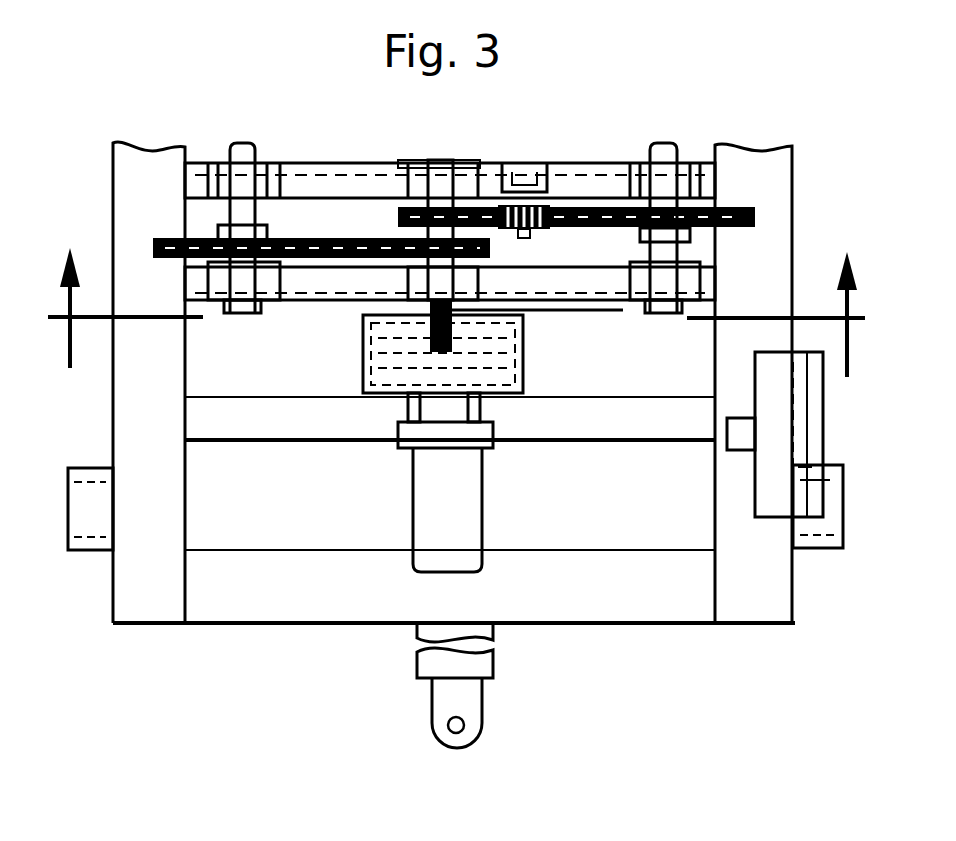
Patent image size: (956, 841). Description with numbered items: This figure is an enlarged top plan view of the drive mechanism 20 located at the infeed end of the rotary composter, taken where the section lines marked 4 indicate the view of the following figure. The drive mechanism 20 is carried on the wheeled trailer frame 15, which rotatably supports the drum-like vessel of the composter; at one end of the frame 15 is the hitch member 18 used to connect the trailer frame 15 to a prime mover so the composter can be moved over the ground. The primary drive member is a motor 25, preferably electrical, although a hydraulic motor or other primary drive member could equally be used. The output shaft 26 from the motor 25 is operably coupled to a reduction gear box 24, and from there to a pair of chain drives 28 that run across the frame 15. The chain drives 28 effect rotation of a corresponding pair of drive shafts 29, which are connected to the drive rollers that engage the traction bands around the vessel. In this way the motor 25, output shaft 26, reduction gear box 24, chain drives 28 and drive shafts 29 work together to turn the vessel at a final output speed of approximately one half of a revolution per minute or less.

The drive mechanism 20 is at (177, 110).
The chain drives 28 is at (165, 213).
The drive shafts 29 is at (255, 150).
The output shaft 26 is at (432, 318).
The reduction gear box 24 is at (363, 370).
The motor 25 is at (434, 518).
The hitch member 18 is at (483, 708).
The wheeled trailer frame 15 is at (770, 625).
The section line 4- 4 is at (456, 333).